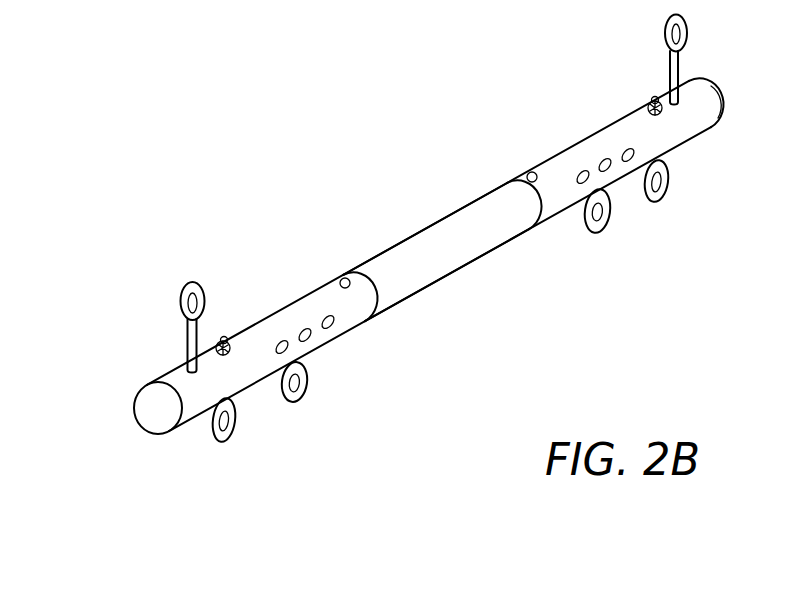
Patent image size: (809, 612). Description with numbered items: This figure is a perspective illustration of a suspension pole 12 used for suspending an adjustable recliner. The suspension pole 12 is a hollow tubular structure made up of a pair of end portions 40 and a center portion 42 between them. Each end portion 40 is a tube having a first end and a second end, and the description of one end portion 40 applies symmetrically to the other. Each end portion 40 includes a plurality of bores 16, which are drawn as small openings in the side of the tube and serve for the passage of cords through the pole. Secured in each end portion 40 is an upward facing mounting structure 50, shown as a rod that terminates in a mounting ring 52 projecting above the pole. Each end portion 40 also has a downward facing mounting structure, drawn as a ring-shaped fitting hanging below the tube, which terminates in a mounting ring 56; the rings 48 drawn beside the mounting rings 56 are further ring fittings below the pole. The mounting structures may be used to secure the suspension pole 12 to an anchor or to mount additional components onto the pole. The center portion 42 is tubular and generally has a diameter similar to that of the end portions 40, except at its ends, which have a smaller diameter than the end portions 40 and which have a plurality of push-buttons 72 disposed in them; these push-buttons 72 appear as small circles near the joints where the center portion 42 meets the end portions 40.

The suspension pole 12 is at (403, 200).
The bores 16 is at (292, 351).
The end portions 40 is at (290, 298).
The center portion 42 is at (382, 252).
The inner rings 48 is at (304, 386).
The upward facing mounting structure 50 is at (191, 347).
The mounting ring 52 is at (187, 293).
The mounting ring 56 is at (236, 417).
The push-buttons 72 is at (340, 278).